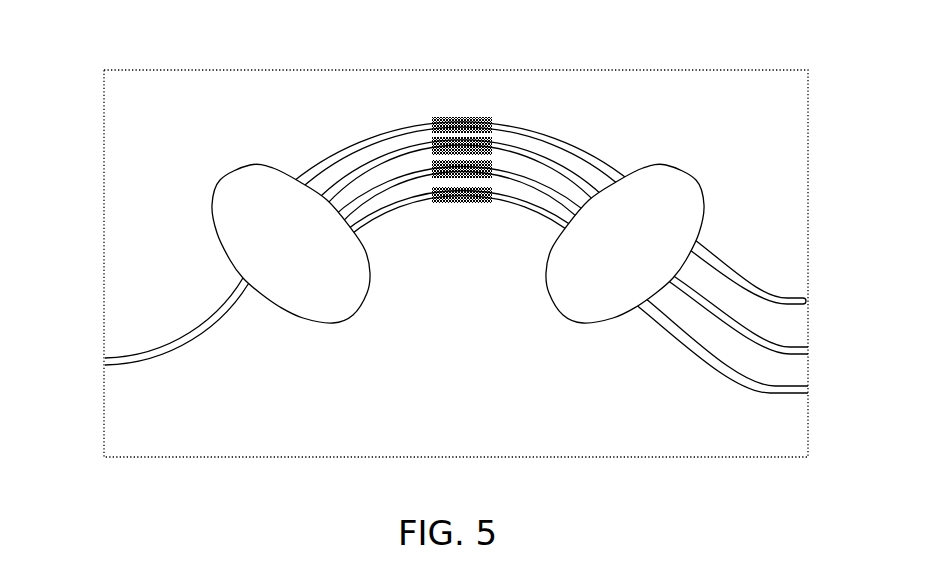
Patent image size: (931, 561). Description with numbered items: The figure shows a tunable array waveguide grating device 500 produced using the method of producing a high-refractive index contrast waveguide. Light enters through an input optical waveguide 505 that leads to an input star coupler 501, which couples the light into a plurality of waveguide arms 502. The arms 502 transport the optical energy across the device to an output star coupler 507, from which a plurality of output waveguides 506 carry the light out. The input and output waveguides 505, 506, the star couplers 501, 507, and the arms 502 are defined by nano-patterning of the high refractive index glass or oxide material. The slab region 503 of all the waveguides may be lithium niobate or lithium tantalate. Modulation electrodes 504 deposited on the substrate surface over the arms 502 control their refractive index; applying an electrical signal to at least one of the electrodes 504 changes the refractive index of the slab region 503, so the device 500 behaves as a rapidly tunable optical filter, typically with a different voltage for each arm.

The tunable array waveguide grating device 500 is at (452, 236).
The input star coupler 501 is at (280, 237).
The waveguide arms 502 is at (393, 125).
The slab region 503 is at (456, 263).
The modulation electrodes 504 is at (463, 120).
The input optical waveguide 505 is at (155, 353).
The output waveguides 506 is at (781, 296).
The output star coupler 507 is at (655, 227).